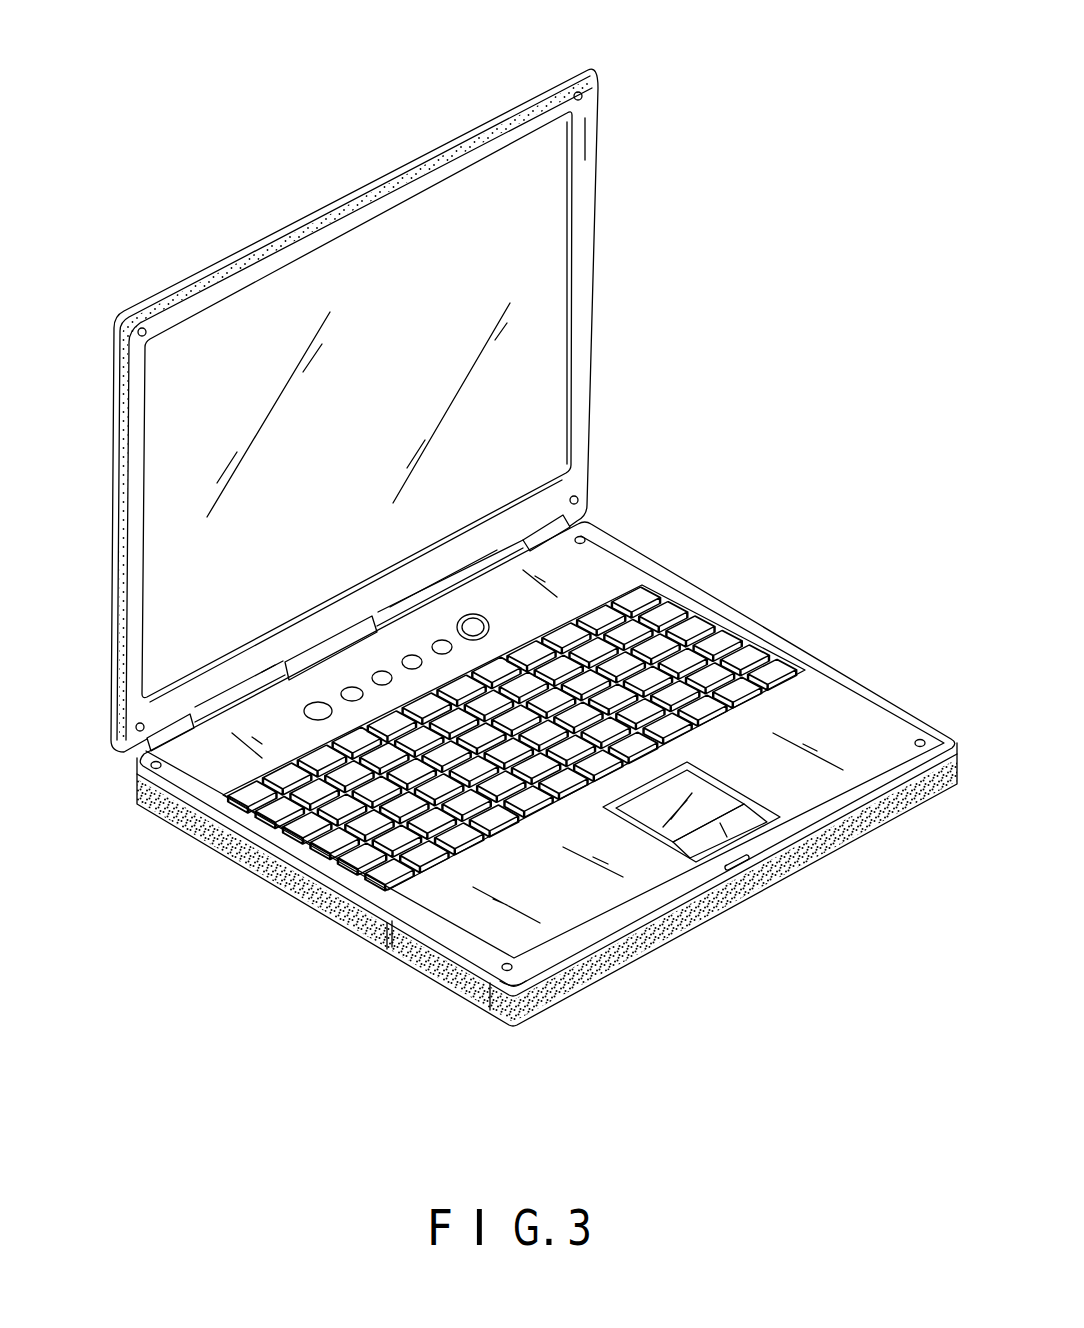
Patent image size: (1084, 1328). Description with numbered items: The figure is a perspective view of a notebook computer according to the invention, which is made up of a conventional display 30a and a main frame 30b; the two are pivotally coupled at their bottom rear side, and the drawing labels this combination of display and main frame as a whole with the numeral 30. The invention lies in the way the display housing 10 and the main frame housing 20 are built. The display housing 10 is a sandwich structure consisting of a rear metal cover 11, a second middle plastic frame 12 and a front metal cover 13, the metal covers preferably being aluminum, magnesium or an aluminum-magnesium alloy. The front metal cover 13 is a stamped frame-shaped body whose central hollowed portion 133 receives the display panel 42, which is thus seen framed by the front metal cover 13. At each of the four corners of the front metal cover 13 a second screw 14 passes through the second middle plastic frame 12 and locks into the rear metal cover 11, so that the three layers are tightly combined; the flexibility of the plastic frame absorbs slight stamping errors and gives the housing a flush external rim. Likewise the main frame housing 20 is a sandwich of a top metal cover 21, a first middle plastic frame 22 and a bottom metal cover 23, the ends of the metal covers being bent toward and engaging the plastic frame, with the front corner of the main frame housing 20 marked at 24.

The display housing 10 is at (428, 30).
The rear metal cover 11 is at (252, 233).
The second middle plastic frame 12 is at (335, 203).
The front metal cover 13 is at (423, 172).
The hollowed portion 133 is at (570, 148).
The second screw 14 is at (136, 726).
The display panel 42 is at (367, 422).
The covering layer 30 is at (675, 222).
The display 30a is at (545, 336).
The main frame 30b is at (823, 690).
The main frame housing 20 is at (84, 903).
The top metal cover 21 is at (204, 768).
The first middle plastic frame 22 is at (310, 890).
The bottom metal cover 23 is at (436, 988).
The front corner 24 is at (508, 963).